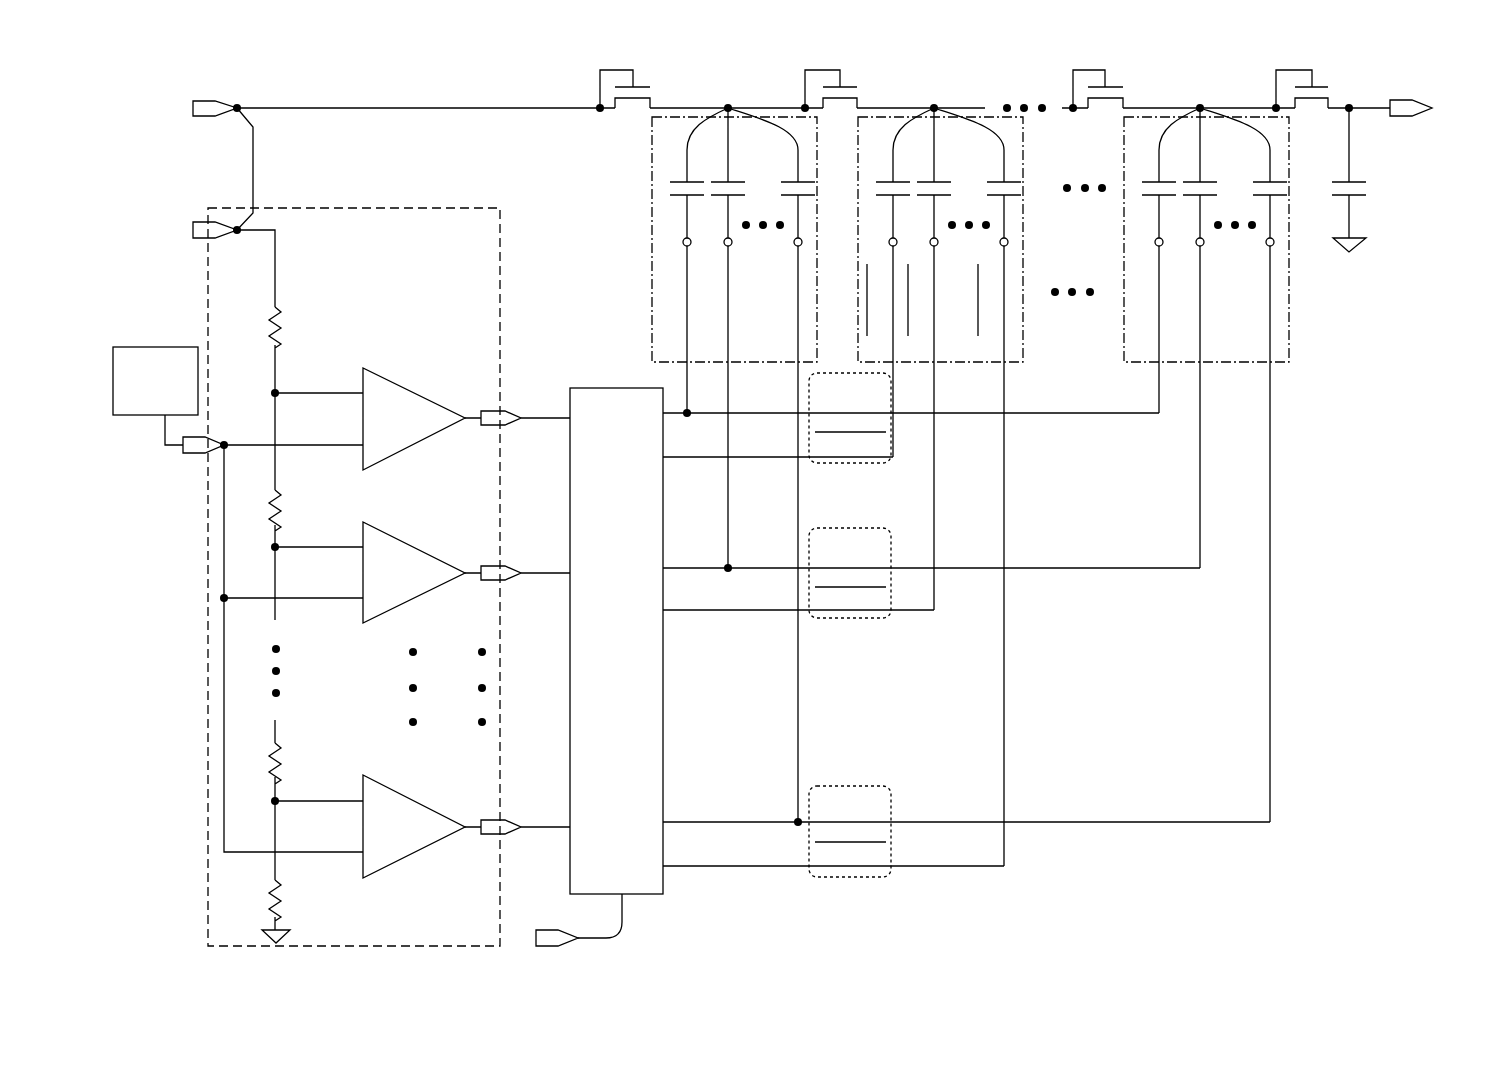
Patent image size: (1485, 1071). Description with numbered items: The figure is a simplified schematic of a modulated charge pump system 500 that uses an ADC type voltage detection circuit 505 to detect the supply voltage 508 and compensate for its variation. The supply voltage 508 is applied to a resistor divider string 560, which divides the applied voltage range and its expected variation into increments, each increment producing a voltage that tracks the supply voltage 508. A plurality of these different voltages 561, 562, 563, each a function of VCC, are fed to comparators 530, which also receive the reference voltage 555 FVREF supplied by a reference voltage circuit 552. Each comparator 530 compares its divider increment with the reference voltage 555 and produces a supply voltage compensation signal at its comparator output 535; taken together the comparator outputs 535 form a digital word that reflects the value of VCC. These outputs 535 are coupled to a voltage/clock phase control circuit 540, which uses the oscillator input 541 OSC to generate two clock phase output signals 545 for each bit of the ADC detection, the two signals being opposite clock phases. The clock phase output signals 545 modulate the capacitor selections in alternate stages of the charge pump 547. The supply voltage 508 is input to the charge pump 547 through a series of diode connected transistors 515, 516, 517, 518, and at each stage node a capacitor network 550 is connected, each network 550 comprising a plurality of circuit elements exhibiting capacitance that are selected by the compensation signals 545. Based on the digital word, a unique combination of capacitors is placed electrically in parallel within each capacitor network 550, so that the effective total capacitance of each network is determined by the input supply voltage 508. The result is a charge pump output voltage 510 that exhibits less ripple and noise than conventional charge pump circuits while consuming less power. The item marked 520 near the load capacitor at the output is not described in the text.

The modulated charge pump system 500 is at (791, 499).
The ADC type voltage detection circuit 505 is at (441, 208).
The supply voltage 508 is at (190, 141).
The charge pump output voltage 510 is at (1375, 112).
The diode connected transistor 515 is at (646, 80).
The diode connected transistor 516 is at (850, 80).
The diode connected transistor 517 is at (1116, 80).
The diode connected transistor 518 is at (1321, 80).
The load capacitor and ground 520 is at (1369, 262).
The comparator 530 is at (385, 375).
The comparator output 535 is at (470, 420).
The voltage/clock phase control circuit 540 is at (614, 388).
The oscillator input 541 is at (622, 905).
The clock phase output signals 545 is at (848, 464).
The charge pump 547 is at (528, 86).
The capacitor network 550 is at (652, 213).
The reference voltage circuit 552 is at (181, 347).
The reference voltage 555 is at (222, 490).
The resistor divider string 560 is at (309, 300).
The divided voltage 561 is at (356, 806).
The divided voltage 562 is at (356, 552).
The divided voltage 563 is at (356, 398).